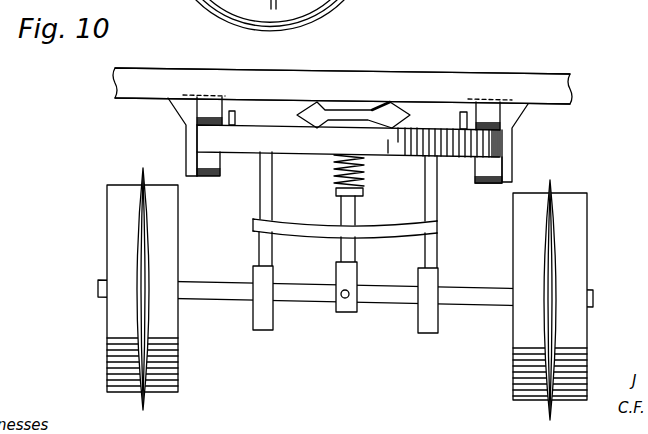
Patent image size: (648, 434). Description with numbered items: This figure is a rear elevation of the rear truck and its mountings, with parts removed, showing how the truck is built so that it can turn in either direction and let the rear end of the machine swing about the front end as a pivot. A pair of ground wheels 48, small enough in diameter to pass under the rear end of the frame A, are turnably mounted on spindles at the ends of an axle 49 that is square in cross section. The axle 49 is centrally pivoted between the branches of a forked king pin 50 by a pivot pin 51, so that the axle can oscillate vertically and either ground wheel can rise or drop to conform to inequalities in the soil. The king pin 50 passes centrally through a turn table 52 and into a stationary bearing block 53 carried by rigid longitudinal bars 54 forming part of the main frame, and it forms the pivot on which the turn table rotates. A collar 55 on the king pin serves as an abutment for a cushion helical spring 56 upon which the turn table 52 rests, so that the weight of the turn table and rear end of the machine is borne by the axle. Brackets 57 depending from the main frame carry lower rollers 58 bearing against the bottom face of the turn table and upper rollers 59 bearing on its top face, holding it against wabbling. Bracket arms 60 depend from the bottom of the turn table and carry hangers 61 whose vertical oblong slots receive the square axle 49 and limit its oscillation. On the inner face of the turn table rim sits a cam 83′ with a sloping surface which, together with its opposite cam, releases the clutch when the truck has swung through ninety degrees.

The frame A is at (548, 84).
The ground wheels 48 is at (117, 341).
The axle 49 is at (242, 292).
The king pin 50 is at (356, 259).
The pivot pin 51 is at (344, 298).
The turn table 52 is at (292, 136).
The bearing block 53 is at (372, 106).
The longitudinal bars 54 is at (184, 86).
The collar 55 is at (359, 195).
The cushion helical spring 56 is at (361, 170).
The brackets 57 is at (186, 130).
The lower rollers 58 is at (209, 178).
The upper rollers 59 is at (210, 108).
The bracket arms 60 is at (272, 205).
The hangers 61 is at (257, 247).
The cam 83′ is at (236, 113).